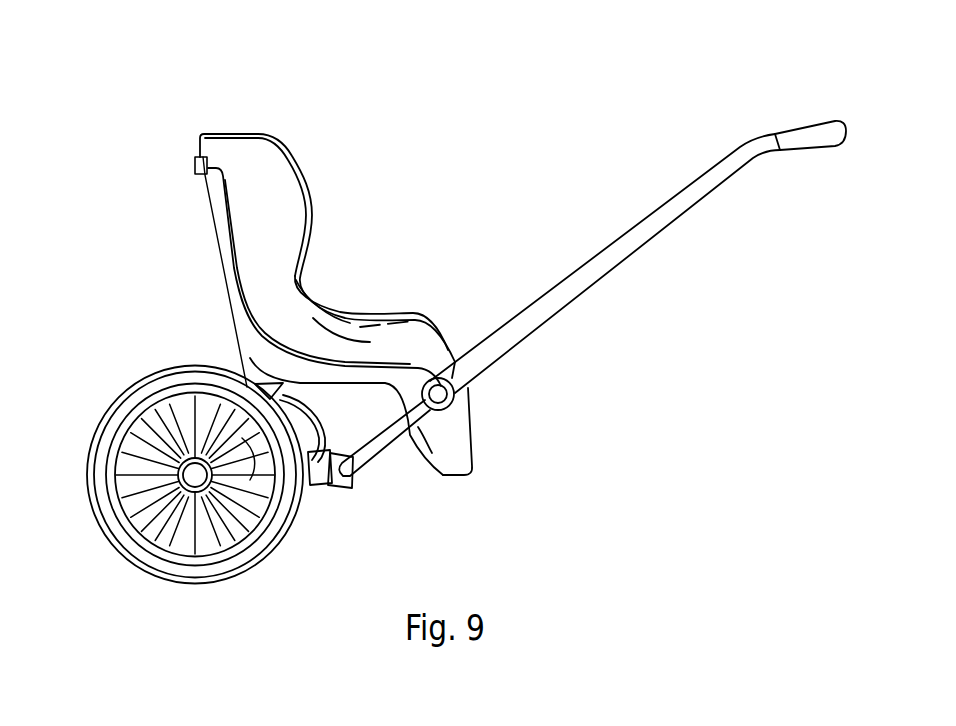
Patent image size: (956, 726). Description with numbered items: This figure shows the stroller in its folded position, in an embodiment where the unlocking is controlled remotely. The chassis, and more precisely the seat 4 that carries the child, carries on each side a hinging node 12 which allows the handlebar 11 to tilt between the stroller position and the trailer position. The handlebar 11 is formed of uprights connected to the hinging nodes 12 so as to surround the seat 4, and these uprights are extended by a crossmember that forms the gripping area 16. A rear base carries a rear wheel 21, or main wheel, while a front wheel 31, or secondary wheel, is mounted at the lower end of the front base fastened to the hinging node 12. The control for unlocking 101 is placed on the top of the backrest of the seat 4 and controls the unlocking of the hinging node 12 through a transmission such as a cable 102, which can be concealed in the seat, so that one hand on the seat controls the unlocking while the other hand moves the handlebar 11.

The seat 4 is at (283, 195).
The control for unlocking 101 is at (196, 167).
The cable 102 is at (234, 281).
The rear wheel 21 is at (127, 397).
The front wheel 31 is at (313, 490).
The hinging node 12 is at (455, 393).
The handlebar 11 is at (610, 263).
The gripping area 16 is at (807, 133).